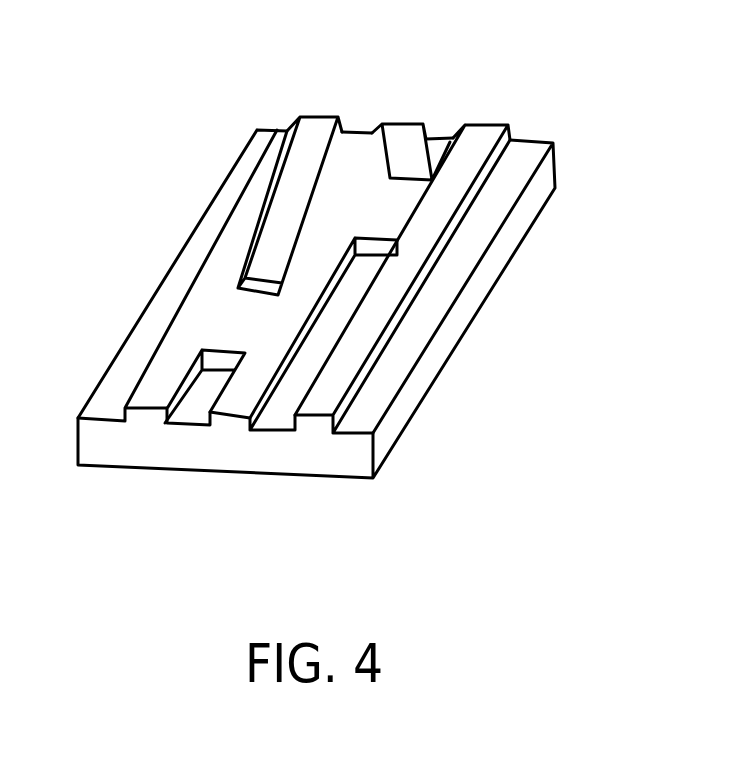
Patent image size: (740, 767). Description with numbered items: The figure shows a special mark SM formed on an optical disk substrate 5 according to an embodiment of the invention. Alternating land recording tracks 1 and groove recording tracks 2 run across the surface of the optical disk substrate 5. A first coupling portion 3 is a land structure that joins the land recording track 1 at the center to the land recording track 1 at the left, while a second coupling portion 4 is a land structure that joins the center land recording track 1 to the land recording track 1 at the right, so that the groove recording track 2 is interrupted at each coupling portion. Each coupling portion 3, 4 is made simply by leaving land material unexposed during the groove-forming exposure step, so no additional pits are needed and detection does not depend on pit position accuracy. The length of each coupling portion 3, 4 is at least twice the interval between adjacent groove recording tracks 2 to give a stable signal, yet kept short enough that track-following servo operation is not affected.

The land recording track 1 is at (141, 408).
The groove recording track 2 is at (176, 424).
The first coupling portion 3 is at (245, 322).
The second coupling portion 4 is at (402, 210).
The optical disk substrate 5 is at (546, 177).
The special mark SM is at (406, 110).